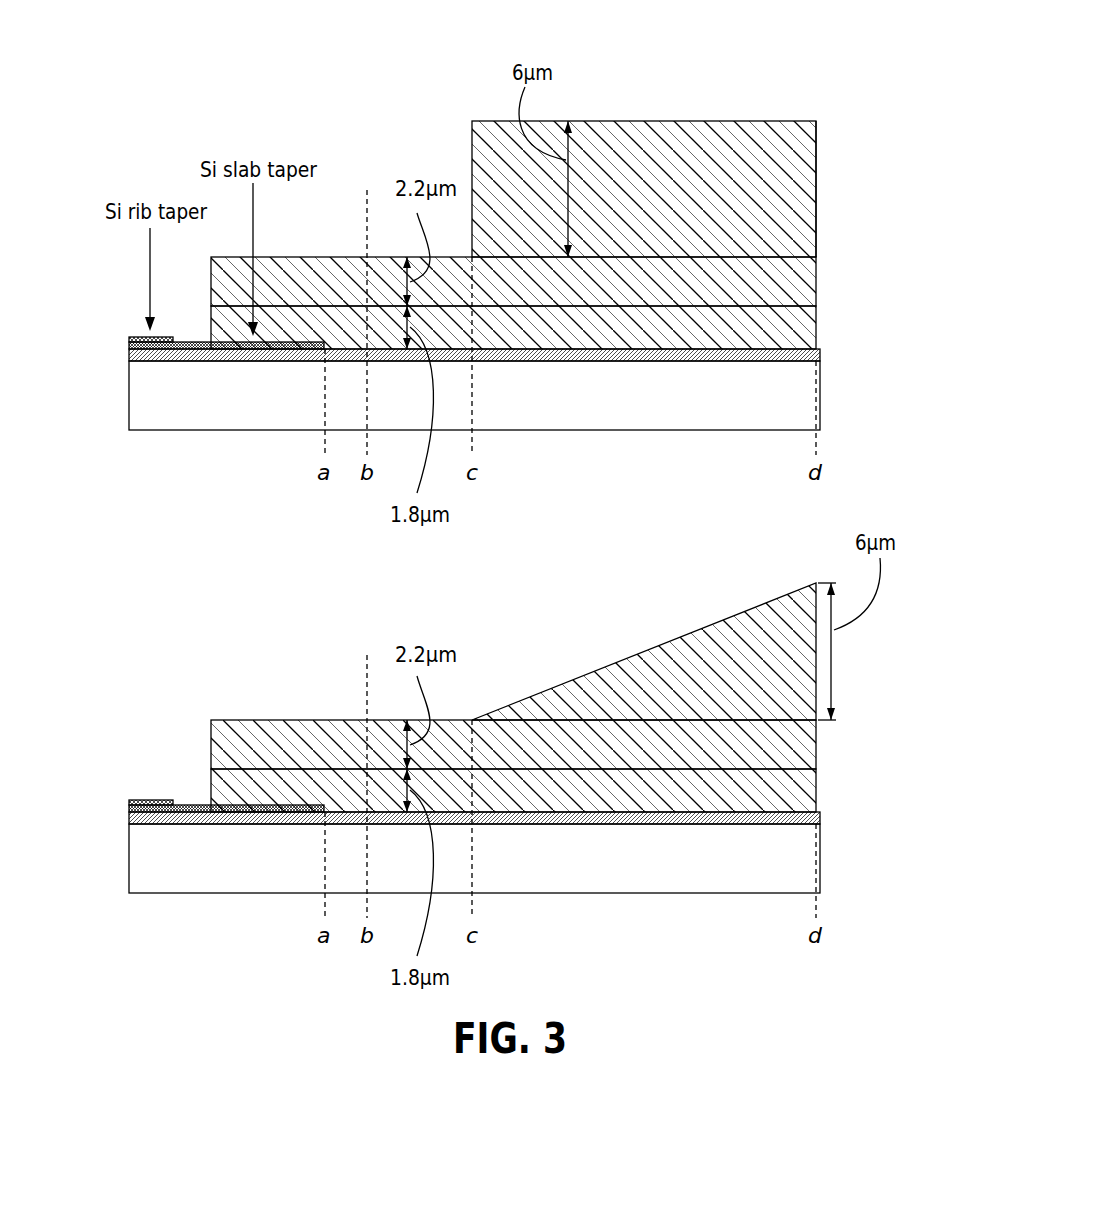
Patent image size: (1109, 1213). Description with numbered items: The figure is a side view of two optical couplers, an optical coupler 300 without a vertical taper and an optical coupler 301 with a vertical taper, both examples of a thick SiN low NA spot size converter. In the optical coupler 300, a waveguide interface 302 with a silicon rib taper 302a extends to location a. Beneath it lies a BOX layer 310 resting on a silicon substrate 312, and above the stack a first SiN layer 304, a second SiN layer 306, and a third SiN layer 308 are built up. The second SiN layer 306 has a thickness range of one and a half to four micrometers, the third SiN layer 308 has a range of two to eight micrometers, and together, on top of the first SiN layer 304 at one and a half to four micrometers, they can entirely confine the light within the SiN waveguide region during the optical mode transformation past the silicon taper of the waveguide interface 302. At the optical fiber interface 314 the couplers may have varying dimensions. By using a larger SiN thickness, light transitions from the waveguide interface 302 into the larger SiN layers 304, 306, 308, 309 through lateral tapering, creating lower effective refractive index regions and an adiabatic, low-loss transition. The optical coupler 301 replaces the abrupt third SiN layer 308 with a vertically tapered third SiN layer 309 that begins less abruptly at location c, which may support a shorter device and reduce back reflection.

The optical coupler 300 is at (754, 61).
The optical coupler 301 is at (754, 523).
The waveguide interface 302 is at (129, 340).
The silicon rib taper 302a is at (142, 336).
The first SiN layer 304 is at (812, 316).
The second SiN layer 306 is at (812, 272).
The third SiN layer 308 is at (812, 203).
The third SiN layer 309 is at (812, 670).
The BOX layer 310 is at (820, 355).
The silicon substrate 312 is at (820, 395).
The optical fiber interface 314 is at (832, 148).